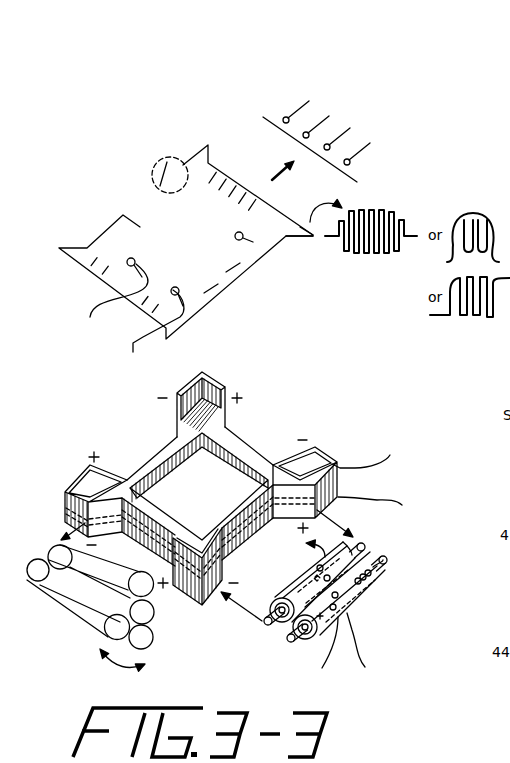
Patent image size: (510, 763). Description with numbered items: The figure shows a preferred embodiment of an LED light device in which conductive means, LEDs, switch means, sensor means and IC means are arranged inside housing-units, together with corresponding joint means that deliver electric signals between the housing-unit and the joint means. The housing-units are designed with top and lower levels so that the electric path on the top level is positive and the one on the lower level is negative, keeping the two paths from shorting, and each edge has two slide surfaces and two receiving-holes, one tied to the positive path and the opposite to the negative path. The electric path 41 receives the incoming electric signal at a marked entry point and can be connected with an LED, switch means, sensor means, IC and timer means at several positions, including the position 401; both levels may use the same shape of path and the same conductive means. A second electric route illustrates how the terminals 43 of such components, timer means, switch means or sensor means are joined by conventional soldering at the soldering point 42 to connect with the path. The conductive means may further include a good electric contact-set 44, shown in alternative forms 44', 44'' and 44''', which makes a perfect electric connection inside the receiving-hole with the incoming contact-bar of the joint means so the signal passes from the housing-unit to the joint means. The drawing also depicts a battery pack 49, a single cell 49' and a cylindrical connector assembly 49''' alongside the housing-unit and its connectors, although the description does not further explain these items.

The electric path 41 is at (460, 122).
The soldering point 42 is at (284, 118).
The terminals 43 is at (304, 98).
The electric contact-set 44 is at (289, 277).
The electric contact-set 44' is at (361, 262).
The electric contact-set 44'' is at (473, 209).
The electric contact-set 44''' is at (470, 309).
The position 401 is at (110, 603).
The battery pack 49 is at (90, 620).
The battery cell 49' is at (176, 648).
The cylindrical connector assembly 49''' is at (352, 620).